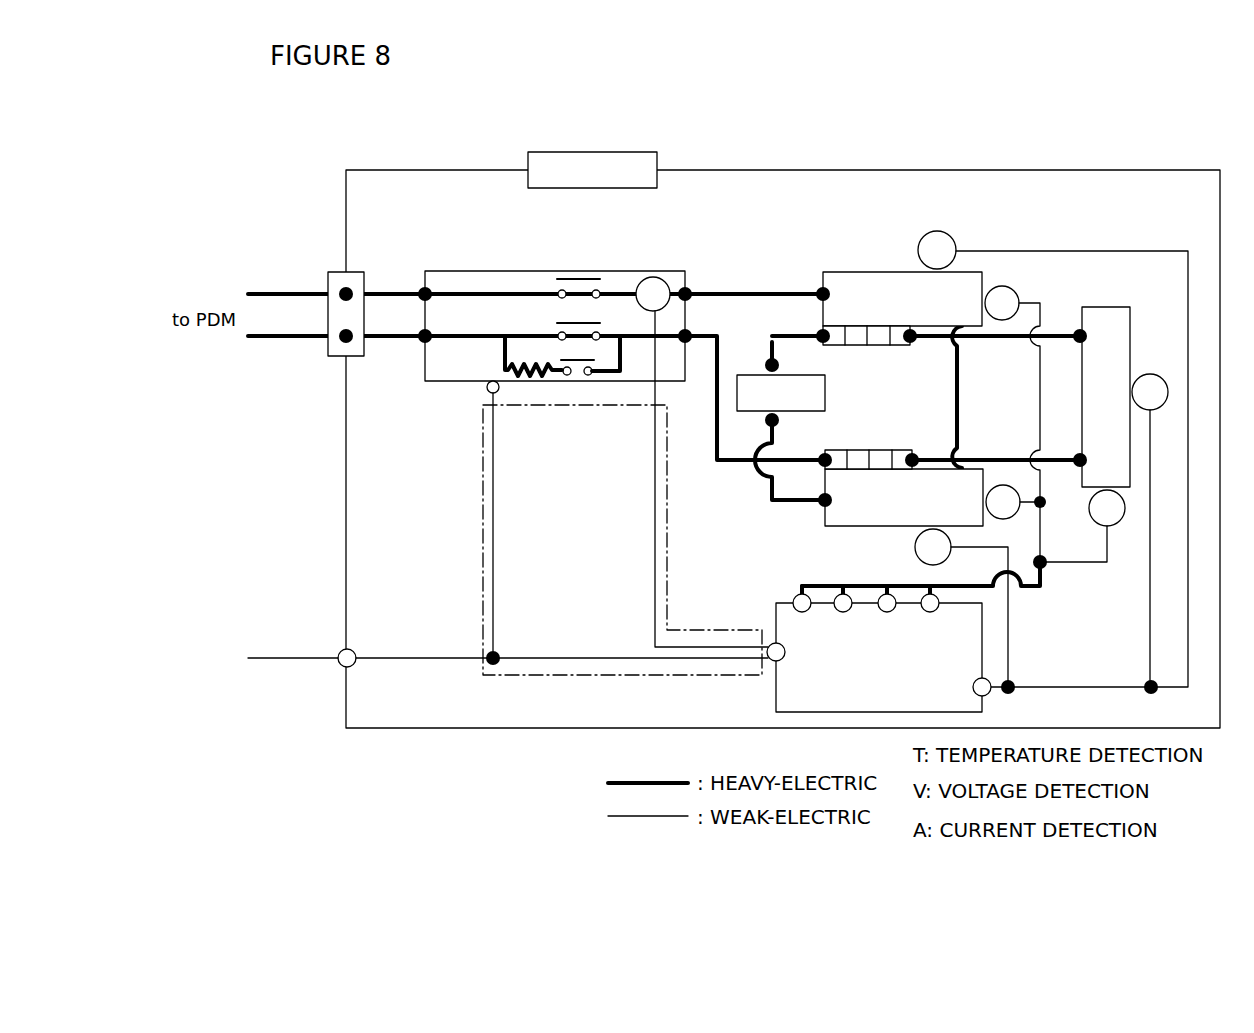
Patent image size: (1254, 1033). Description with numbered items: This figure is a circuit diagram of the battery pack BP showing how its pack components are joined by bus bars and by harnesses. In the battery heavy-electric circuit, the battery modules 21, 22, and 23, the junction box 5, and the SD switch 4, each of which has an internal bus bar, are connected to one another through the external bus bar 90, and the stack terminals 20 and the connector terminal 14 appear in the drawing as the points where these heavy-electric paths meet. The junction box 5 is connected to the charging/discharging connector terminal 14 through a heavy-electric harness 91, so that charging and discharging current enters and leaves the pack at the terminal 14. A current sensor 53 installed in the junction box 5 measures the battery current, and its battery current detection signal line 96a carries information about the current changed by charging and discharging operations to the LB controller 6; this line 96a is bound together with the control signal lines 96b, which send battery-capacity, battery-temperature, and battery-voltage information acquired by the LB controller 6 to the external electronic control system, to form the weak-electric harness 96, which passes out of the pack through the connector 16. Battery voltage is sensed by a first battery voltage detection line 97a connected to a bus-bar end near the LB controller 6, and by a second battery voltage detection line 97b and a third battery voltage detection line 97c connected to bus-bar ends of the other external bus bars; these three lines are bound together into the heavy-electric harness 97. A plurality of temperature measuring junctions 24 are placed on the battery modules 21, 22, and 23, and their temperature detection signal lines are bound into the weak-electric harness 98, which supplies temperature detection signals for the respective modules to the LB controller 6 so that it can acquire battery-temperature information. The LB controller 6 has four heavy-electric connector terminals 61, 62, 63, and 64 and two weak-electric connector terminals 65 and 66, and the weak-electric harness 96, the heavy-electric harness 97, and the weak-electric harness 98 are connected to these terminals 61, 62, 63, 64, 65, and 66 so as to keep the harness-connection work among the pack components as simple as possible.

The battery pack BP is at (744, 168).
The charging/discharging connector terminal 14 is at (328, 287).
The heavy-electric harness 91 is at (398, 334).
The junction box 5 is at (470, 270).
The current sensor 53 is at (653, 276).
The external bus bar 90 is at (760, 452).
The SD switch 4 is at (832, 392).
The battery module 22 is at (855, 272).
The battery module 23 is at (823, 518).
The battery module 21 is at (1100, 308).
The battery module stack terminals 20 is at (1100, 390).
The temperature measuring junction 24 is at (946, 232).
The weak-electric harness 98 is at (1116, 687).
The second battery voltage detection line 97b is at (1020, 300).
The third battery voltage detection line 97c is at (1028, 506).
The first battery voltage detection line 97a is at (1097, 564).
The heavy-electric harness 97 is at (1032, 590).
The LB controller 6 is at (773, 603).
The heavy-electric connector terminal 61 is at (805, 612).
The heavy-electric connector terminal 62 is at (846, 612).
The heavy-electric connector terminal 63 is at (889, 612).
The heavy-electric connector terminal 64 is at (932, 612).
The weak-electric connector terminal 65 is at (986, 678).
The weak-electric connector terminal 66 is at (772, 661).
The weak-electric connector 16 is at (340, 651).
The weak-electric harness 96 is at (483, 497).
The battery current detection signal line 96a is at (655, 500).
The control signal lines 96b is at (563, 656).